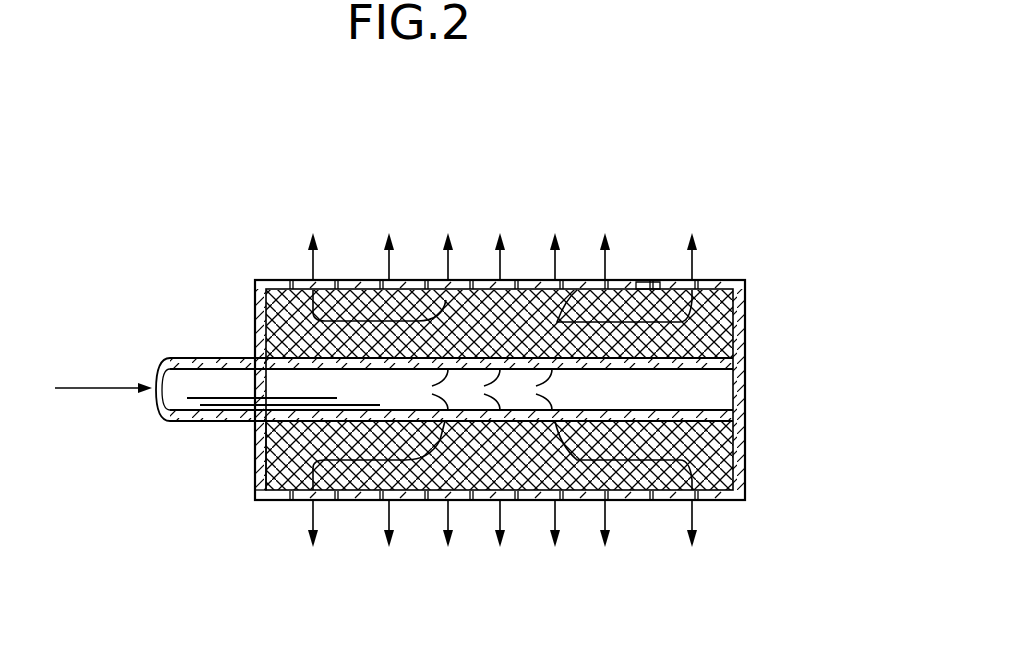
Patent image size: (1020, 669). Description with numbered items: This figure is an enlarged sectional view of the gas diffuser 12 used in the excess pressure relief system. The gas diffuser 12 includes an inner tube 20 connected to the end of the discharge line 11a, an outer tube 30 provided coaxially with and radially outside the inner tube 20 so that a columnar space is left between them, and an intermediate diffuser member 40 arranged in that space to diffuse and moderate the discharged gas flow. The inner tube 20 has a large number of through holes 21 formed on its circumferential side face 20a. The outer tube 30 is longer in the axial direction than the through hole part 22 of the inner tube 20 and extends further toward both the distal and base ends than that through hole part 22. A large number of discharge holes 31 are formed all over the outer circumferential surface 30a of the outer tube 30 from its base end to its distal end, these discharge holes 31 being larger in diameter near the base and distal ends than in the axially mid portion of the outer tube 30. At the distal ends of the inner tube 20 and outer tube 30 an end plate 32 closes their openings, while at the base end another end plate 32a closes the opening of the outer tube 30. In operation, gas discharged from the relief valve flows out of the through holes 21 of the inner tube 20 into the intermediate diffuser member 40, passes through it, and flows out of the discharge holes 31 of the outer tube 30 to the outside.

The discharge line 11a is at (205, 358).
The gas diffuser 12 is at (662, 168).
The inner tube 20 is at (690, 402).
The circumferential side face 20a is at (692, 376).
The through holes 21 is at (448, 369).
The through hole part 22 is at (593, 345).
The outer tube 30 is at (736, 268).
The outer circumferential surface 30a is at (648, 282).
The discharge holes 31 is at (428, 283).
The end plate 32 is at (745, 327).
The end plate 32a is at (282, 472).
The intermediate diffuser member 40 is at (272, 503).